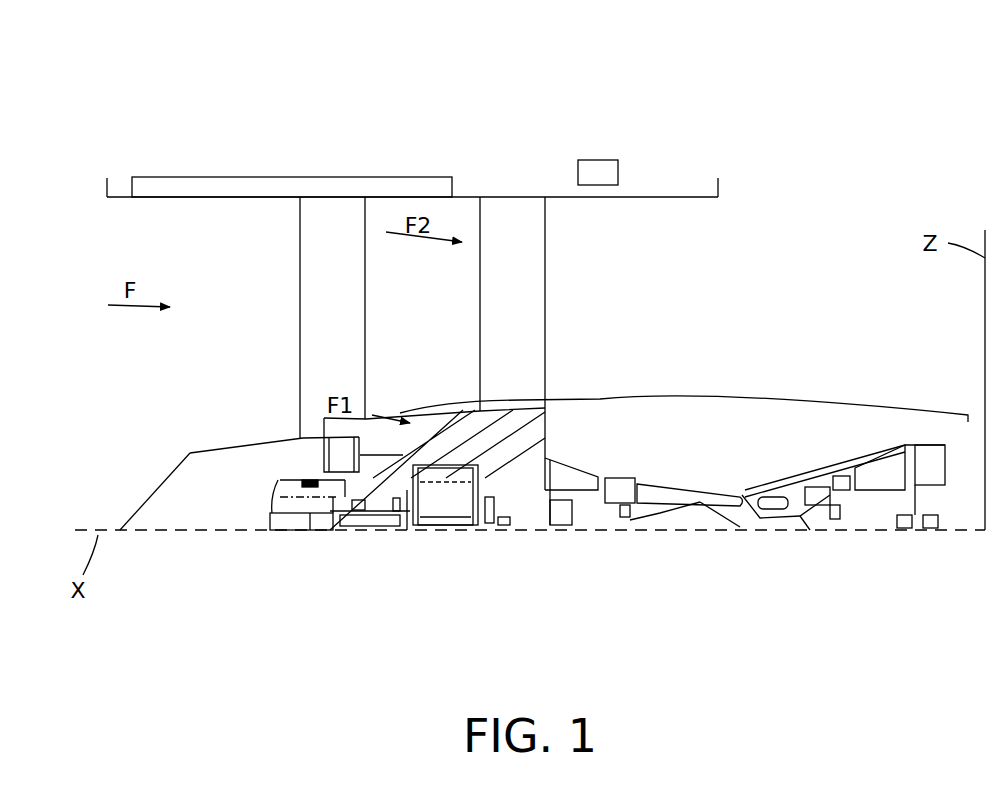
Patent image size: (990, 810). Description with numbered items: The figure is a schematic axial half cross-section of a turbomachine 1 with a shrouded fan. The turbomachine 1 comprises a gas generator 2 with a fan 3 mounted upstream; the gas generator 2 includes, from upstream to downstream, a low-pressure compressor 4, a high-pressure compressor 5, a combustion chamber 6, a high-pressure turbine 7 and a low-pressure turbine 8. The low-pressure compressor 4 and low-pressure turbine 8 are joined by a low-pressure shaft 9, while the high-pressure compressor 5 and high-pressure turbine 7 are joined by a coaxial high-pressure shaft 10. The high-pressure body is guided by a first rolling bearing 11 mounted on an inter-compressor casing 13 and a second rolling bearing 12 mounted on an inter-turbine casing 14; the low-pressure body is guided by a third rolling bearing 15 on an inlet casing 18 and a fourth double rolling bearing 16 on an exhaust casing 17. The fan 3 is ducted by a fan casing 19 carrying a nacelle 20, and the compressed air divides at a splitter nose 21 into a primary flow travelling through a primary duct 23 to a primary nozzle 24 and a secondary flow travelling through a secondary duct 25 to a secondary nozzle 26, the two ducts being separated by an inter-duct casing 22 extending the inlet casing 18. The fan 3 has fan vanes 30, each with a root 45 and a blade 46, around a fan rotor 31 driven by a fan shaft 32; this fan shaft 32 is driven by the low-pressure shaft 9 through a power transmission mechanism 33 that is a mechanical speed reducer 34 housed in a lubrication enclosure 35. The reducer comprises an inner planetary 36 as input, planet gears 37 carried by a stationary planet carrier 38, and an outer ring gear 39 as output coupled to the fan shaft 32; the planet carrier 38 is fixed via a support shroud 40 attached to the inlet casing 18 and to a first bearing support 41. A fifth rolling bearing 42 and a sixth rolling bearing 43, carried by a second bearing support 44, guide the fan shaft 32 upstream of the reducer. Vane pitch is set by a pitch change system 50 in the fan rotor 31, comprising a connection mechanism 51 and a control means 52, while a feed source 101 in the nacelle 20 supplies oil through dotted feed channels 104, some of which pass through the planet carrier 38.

The turbomachine 1 is at (745, 270).
The gas generator 2 is at (686, 545).
The fan 3 is at (205, 266).
The low-pressure compressor 4 is at (572, 510).
The high-pressure compressor 5 is at (697, 506).
The combustion chamber 6 is at (770, 508).
The high-pressure turbine 7 is at (810, 530).
The low-pressure turbine 8 is at (880, 455).
The low-pressure shaft 9 is at (590, 532).
The high-pressure shaft 10 is at (760, 530).
The first rolling bearing 11 is at (625, 528).
The second rolling bearing 12 is at (835, 530).
The inter-compressor casing 13 is at (622, 478).
The inter-turbine casing 14 is at (850, 475).
The third rolling bearing 15 is at (553, 532).
The fourth double rolling bearing 16 is at (905, 528).
The exhaust casing 17 is at (935, 462).
The inlet casing 18 is at (472, 430).
The fan casing 19 is at (272, 195).
The nacelle 20 is at (667, 183).
The splitter nose 21 is at (445, 420).
The inter-duct casing 22 is at (715, 395).
The primary duct 23 is at (412, 432).
The primary nozzle 24 is at (968, 412).
The secondary duct 25 is at (428, 272).
The secondary nozzle 26 is at (694, 197).
The fan vane 30 is at (298, 320).
The fan rotor 31 is at (222, 462).
The fan shaft 32 is at (363, 532).
The power transmission mechanism 33 is at (445, 536).
The mechanical speed reducer 34 is at (500, 533).
The lubrication enclosure 35 is at (500, 350).
The inner planetary 36 is at (455, 537).
The planet gears 37 is at (427, 530).
The planet carrier 38 is at (510, 440).
The outer ring gear 39 is at (490, 430).
The support shroud 40 is at (512, 535).
The first bearing support 41 is at (525, 450).
The fifth rolling bearing 42 is at (393, 532).
The sixth rolling bearing 43 is at (328, 533).
The second bearing support 44 is at (309, 466).
The root 45 is at (323, 436).
The blade 46 is at (312, 248).
The pitch change system 50 is at (278, 470).
The connection mechanism 51 is at (304, 466).
The control means 52 is at (281, 536).
The feed source 101 is at (600, 183).
The feed channels 104 is at (422, 530).